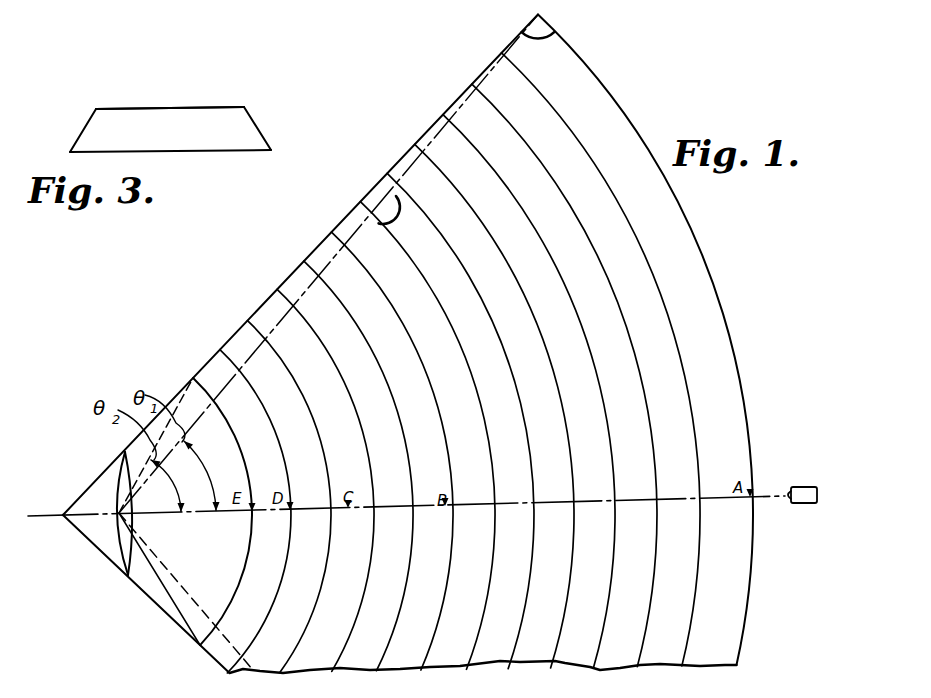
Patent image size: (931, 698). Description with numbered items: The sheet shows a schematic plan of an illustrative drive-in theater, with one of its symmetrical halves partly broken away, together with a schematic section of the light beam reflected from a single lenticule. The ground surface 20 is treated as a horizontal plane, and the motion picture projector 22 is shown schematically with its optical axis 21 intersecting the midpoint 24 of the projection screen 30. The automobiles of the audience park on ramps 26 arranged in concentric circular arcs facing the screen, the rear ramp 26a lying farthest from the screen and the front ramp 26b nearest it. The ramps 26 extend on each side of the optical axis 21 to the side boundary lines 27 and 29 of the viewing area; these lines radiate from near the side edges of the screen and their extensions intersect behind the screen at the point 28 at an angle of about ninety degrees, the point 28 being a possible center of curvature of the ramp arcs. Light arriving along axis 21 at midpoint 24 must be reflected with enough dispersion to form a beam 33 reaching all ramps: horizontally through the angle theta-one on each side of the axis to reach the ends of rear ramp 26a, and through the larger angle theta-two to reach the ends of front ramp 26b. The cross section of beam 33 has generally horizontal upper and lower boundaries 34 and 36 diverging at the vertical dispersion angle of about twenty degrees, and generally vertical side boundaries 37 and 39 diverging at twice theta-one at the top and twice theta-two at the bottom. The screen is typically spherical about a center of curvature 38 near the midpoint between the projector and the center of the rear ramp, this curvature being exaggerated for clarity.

In FIG. 1, the ground surface 20 is at (782, 345).
In FIG. 1, the optical axis 21 is at (403, 504).
In FIG. 1, the motion picture projector 22 is at (808, 505).
In FIG. 1, the midpoint of the projection screen 24 is at (121, 514).
In FIG. 1, the ramps 26 is at (372, 183).
In FIG. 1, the rear ramp 26a is at (521, 32).
In FIG. 1, the front ramp 26b is at (247, 547).
In FIG. 1, the side boundary line 27 is at (287, 276).
In FIG. 1, the intersection point 28 is at (63, 513).
In FIG. 1, the side boundary line 29 is at (207, 656).
In FIG. 1, the projection screen 30 is at (118, 541).
In FIG. 3, the light beam 33 is at (239, 105).
In FIG. 3, the upper boundary of beam 34 is at (152, 107).
In FIG. 3, the lower boundary of beam 36 is at (212, 152).
In FIG. 3, the side boundary of beam 37 is at (85, 128).
In FIG. 1, the center of curvature of screen 38 is at (772, 496).
In FIG. 3, the side boundary of beam 39 is at (258, 122).